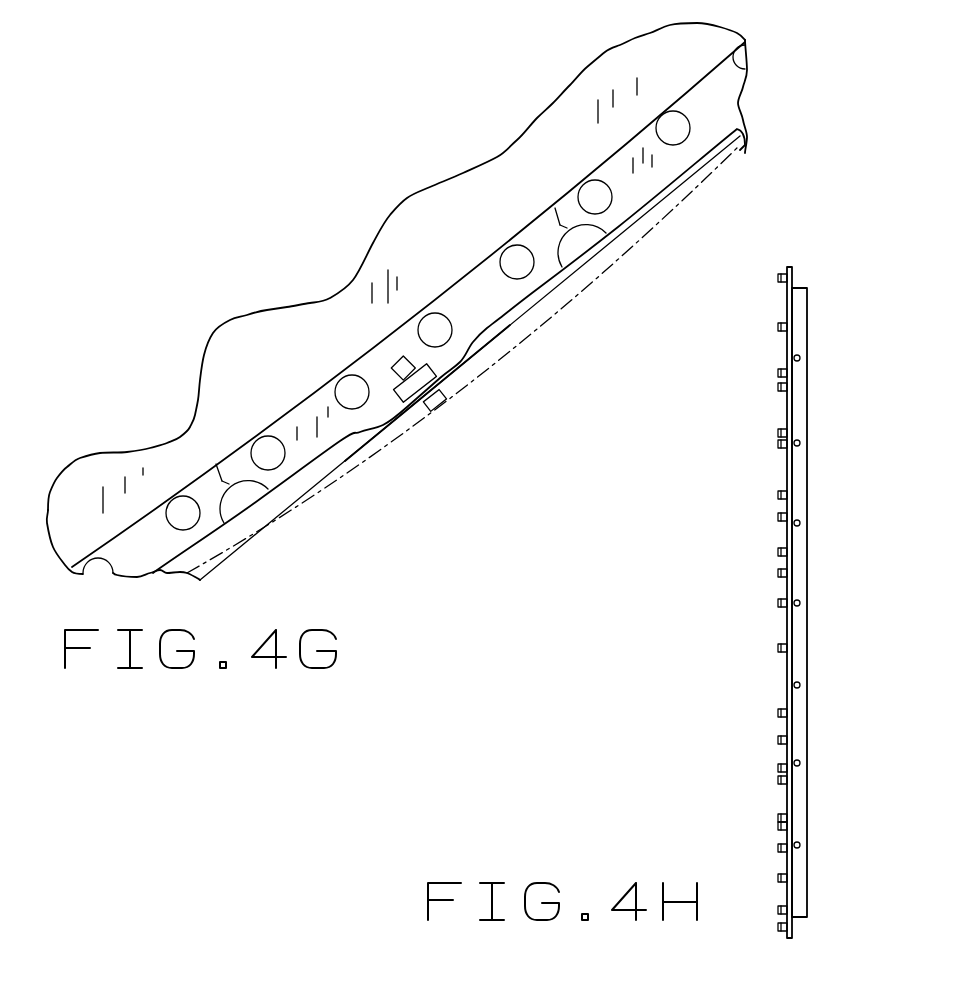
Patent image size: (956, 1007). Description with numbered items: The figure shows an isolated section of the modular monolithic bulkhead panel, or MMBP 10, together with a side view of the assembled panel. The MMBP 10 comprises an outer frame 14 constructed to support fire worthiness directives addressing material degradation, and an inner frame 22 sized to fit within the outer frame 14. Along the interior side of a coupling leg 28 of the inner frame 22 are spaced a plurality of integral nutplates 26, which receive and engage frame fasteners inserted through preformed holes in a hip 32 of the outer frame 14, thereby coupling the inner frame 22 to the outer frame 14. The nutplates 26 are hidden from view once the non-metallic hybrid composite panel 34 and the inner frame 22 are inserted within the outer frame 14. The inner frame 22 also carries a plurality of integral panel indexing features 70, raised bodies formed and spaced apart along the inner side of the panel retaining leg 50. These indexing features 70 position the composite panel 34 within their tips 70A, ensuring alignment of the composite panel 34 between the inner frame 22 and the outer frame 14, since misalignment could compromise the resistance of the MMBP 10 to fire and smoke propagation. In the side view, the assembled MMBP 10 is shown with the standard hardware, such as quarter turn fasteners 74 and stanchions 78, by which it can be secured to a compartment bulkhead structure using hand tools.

In FIG. 4H, the MMBP 10 is at (746, 594).
In FIG. 4H, the outer frame 14 is at (808, 418).
In FIG. 4G, the inner frame 22 is at (458, 287).
In FIG. 4G, the integral nutplates 26 is at (400, 378).
In FIG. 4G, the coupling leg 28 is at (558, 300).
In FIG. 4H, the hip 32 is at (802, 476).
In FIG. 4G, the non-metallic hybrid composite panel 34 is at (252, 360).
In FIG. 4G, the panel retaining leg 50 is at (488, 302).
In FIG. 4G, the integral panel indexing features 70 is at (237, 500).
In FIG. 4G, the tips 70A is at (222, 481).
In FIG. 4H, the quarter turn fasteners 74 is at (777, 518).
In FIG. 4H, the stanchions 78 is at (780, 510).